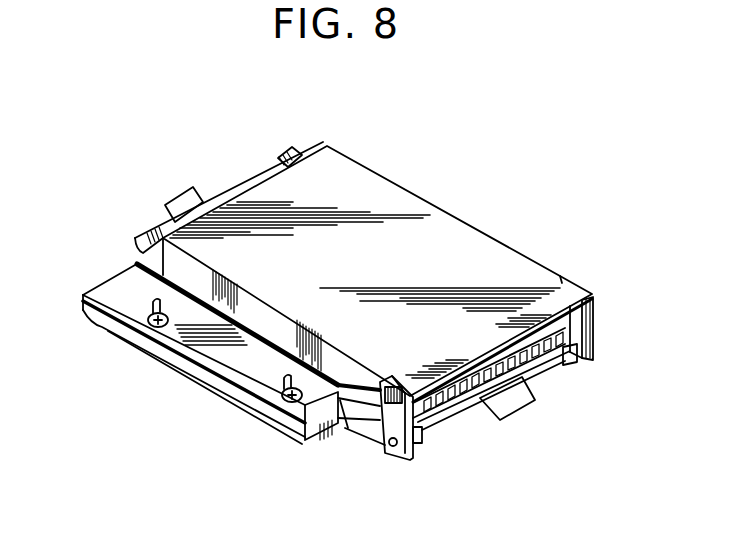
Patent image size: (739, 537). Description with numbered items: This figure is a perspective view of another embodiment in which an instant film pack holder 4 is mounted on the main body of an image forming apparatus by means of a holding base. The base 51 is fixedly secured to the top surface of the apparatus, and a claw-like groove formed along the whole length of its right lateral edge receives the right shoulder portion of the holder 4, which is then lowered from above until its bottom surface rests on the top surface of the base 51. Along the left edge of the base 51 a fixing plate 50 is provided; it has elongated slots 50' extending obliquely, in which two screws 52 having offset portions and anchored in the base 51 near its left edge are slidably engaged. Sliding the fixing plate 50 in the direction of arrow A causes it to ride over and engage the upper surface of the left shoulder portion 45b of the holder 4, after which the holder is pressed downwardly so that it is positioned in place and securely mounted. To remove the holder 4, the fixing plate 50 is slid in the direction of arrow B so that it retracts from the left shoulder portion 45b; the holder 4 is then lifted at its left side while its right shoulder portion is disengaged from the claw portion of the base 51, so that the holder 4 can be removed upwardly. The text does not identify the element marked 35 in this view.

The film pack holder 4 is at (441, 246).
The guide rail 35 is at (281, 150).
The fixing plate 50 is at (210, 352).
The elongated slots 50' is at (175, 336).
The base 51 is at (318, 450).
The screws 52 is at (156, 328).
The left shoulder portion 45b is at (377, 412).
The arrow A is at (278, 443).
The arrow B is at (267, 461).